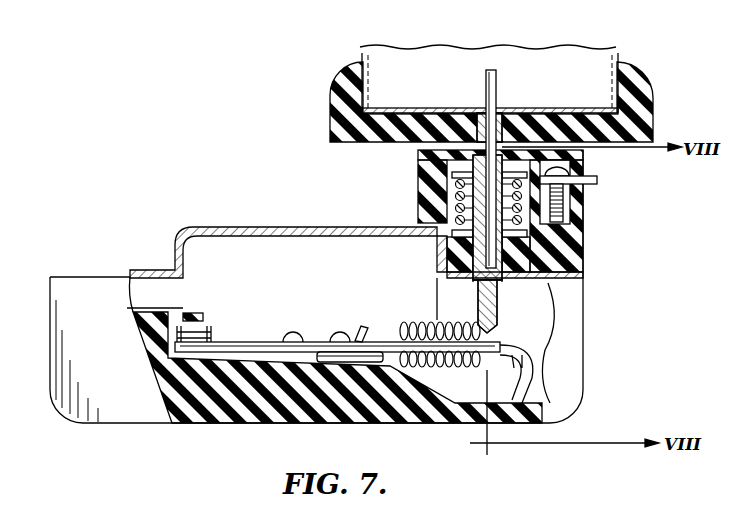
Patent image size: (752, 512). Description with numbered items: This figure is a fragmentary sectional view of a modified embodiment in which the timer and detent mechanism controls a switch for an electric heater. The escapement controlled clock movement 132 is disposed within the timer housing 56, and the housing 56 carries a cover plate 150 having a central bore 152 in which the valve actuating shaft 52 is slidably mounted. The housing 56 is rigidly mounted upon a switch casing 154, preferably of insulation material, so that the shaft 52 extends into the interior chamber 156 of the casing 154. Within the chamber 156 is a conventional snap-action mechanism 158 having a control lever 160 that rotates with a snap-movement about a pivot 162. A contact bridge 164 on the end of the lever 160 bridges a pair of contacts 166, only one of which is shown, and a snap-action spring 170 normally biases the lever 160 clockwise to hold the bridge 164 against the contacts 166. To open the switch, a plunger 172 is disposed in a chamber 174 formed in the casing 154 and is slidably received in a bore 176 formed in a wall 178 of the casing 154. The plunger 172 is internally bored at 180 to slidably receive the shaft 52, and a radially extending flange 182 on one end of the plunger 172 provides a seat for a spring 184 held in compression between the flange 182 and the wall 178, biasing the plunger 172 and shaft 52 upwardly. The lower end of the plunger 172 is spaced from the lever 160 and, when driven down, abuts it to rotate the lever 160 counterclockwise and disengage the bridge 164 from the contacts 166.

The valve actuating shaft 52 is at (497, 94).
The timer housing 56 is at (655, 126).
The escapement controlled clock movement 132 is at (597, 66).
The cover plate 150 is at (371, 106).
The central bore 152 is at (484, 118).
The switch casing 154 is at (584, 260).
The interior chamber 156 is at (316, 257).
The snap-action mechanism 158 is at (325, 320).
The control lever 160 is at (255, 345).
The pivot 162 is at (500, 360).
The contact bridge 164 is at (215, 341).
The contacts 166 is at (187, 320).
The snap-action spring 170 is at (408, 324).
The plunger 172 is at (498, 312).
The chamber 174 is at (418, 156).
The bore 176 is at (472, 256).
The wall 178 is at (500, 285).
The internal bore 180 is at (455, 197).
The radially extending flange 182 is at (452, 175).
The spring 184 is at (455, 232).